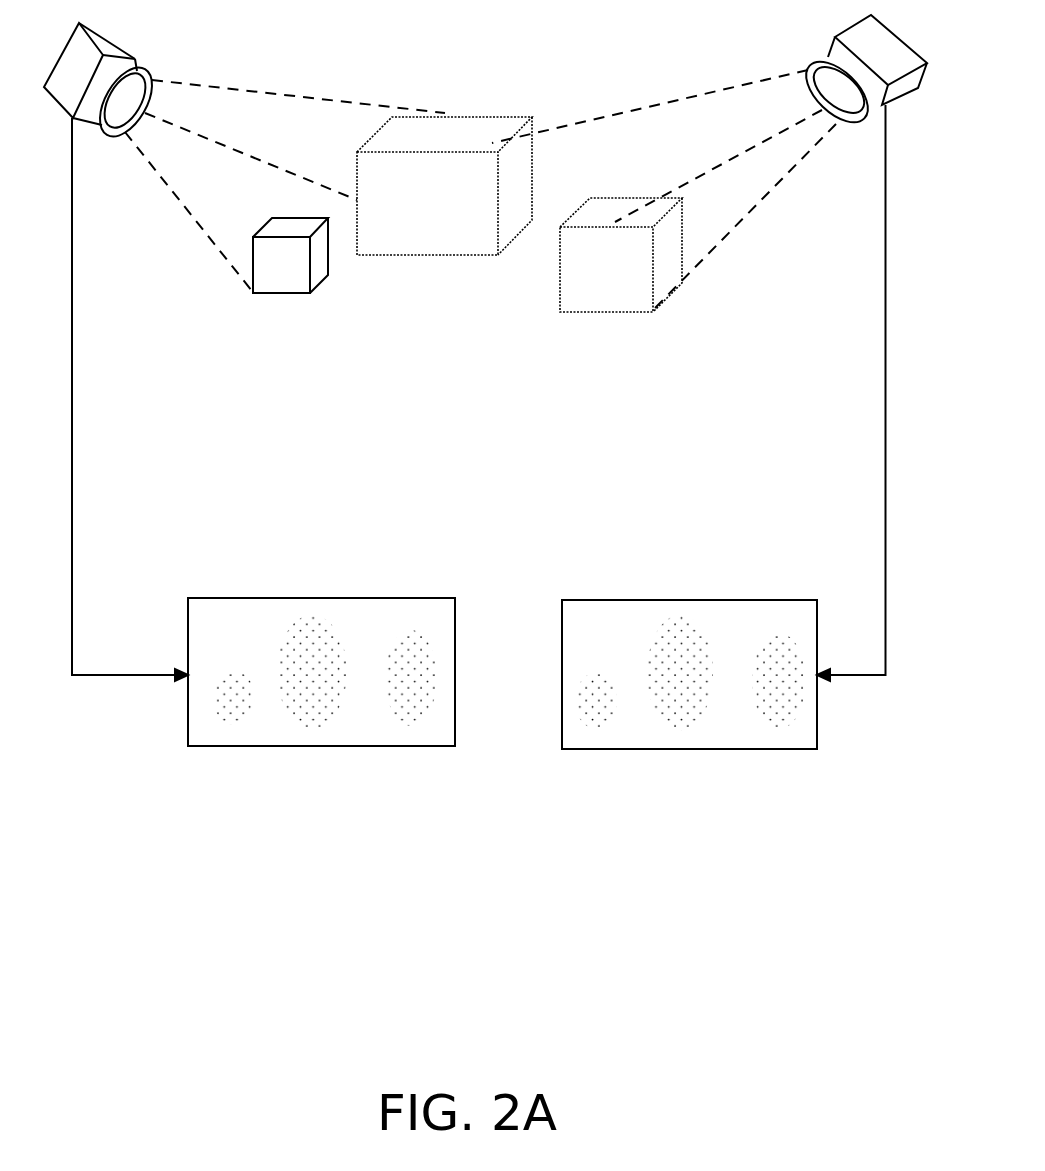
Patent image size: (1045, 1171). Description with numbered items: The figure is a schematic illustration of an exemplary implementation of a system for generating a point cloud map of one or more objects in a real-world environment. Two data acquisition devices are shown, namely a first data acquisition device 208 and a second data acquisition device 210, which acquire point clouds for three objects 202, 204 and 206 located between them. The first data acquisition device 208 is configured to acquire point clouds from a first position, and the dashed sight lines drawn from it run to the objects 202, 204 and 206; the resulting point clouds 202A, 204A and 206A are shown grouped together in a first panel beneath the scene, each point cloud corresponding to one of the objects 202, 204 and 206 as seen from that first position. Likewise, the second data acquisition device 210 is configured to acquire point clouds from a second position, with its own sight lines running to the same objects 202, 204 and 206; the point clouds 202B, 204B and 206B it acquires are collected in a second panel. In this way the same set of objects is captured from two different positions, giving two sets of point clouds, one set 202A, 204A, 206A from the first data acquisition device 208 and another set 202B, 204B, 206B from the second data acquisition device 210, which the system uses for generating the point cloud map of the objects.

The object 202 is at (280, 285).
The object 204 is at (383, 238).
The object 206 is at (592, 292).
The first data acquisition device 208 is at (103, 33).
The second data acquisition device 210 is at (865, 31).
The point cloud 202A is at (200, 761).
The point cloud 204A is at (286, 730).
The point cloud 206A is at (380, 735).
The point cloud 202B is at (565, 760).
The point cloud 204B is at (653, 732).
The point cloud 206B is at (745, 737).